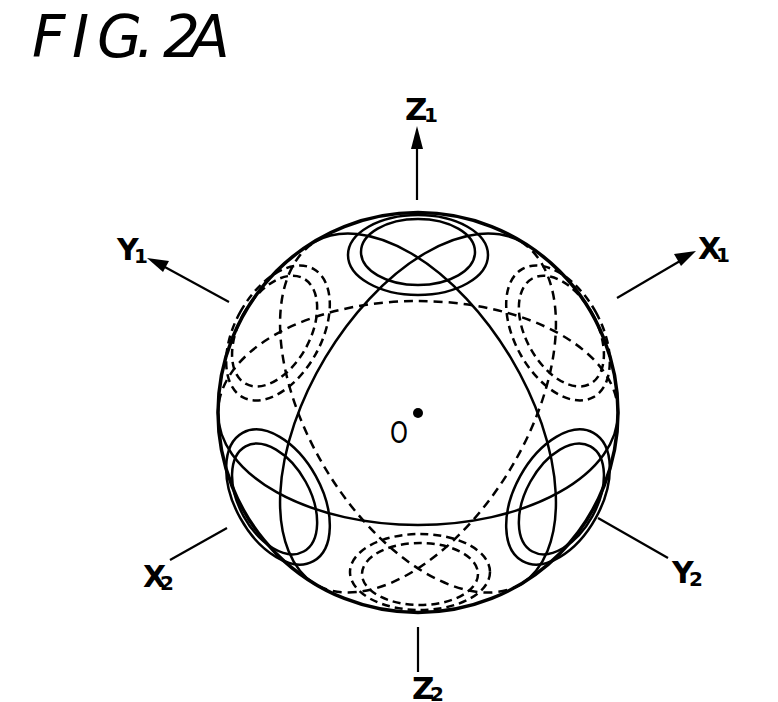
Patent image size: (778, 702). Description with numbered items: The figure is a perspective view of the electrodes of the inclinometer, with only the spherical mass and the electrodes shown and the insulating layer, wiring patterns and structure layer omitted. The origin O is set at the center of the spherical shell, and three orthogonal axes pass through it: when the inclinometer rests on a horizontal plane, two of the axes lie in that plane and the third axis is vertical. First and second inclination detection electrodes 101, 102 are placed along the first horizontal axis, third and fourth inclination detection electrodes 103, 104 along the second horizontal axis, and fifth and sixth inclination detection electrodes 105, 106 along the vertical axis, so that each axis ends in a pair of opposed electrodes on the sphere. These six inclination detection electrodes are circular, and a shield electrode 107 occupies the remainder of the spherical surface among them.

The first inclination detection electrode 101 is at (575, 292).
The second inclination detection electrode 102 is at (266, 500).
The third inclination detection electrode 103 is at (267, 287).
The fourth inclination detection electrode 104 is at (580, 495).
The fifth inclination detection electrode 105 is at (400, 236).
The sixth inclination detection electrode 106 is at (440, 612).
The shield electrode 107 is at (335, 562).